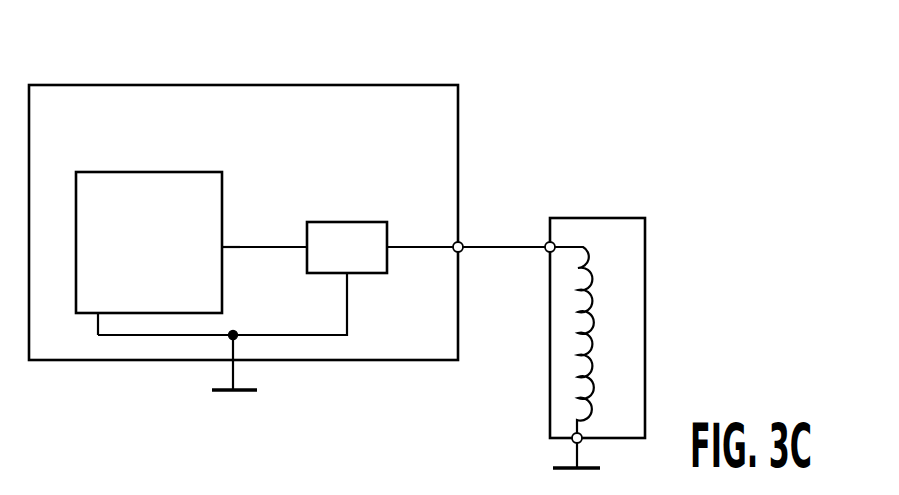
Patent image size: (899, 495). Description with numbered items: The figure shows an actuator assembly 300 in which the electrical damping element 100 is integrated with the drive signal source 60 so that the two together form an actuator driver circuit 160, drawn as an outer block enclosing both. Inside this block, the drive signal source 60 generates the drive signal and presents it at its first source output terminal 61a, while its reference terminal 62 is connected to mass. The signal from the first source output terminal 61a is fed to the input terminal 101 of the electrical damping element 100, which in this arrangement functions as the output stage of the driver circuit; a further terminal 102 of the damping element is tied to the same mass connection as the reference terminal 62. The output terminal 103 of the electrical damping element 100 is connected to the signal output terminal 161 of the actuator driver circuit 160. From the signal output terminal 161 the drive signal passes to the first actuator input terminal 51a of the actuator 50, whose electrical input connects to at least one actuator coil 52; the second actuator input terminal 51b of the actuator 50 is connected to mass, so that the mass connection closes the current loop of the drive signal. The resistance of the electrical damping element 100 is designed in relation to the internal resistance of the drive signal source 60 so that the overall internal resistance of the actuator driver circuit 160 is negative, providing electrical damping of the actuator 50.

The actuator assembly 300 is at (695, 190).
The actuator driver circuit 160 is at (183, 84).
The drive signal source 60 is at (167, 171).
The first source output terminal 61a is at (213, 258).
The reference terminal 62 is at (111, 302).
The electrical damping element 100 is at (365, 261).
The input terminal 101 is at (306, 235).
The damping element ground terminal 102 is at (345, 274).
The output terminal 103 is at (388, 240).
The signal output terminal 161 is at (463, 251).
The actuator 50 is at (586, 217).
The first actuator input terminal 51a is at (547, 243).
The second actuator input terminal 51b is at (572, 442).
The actuator coil 52 is at (584, 333).